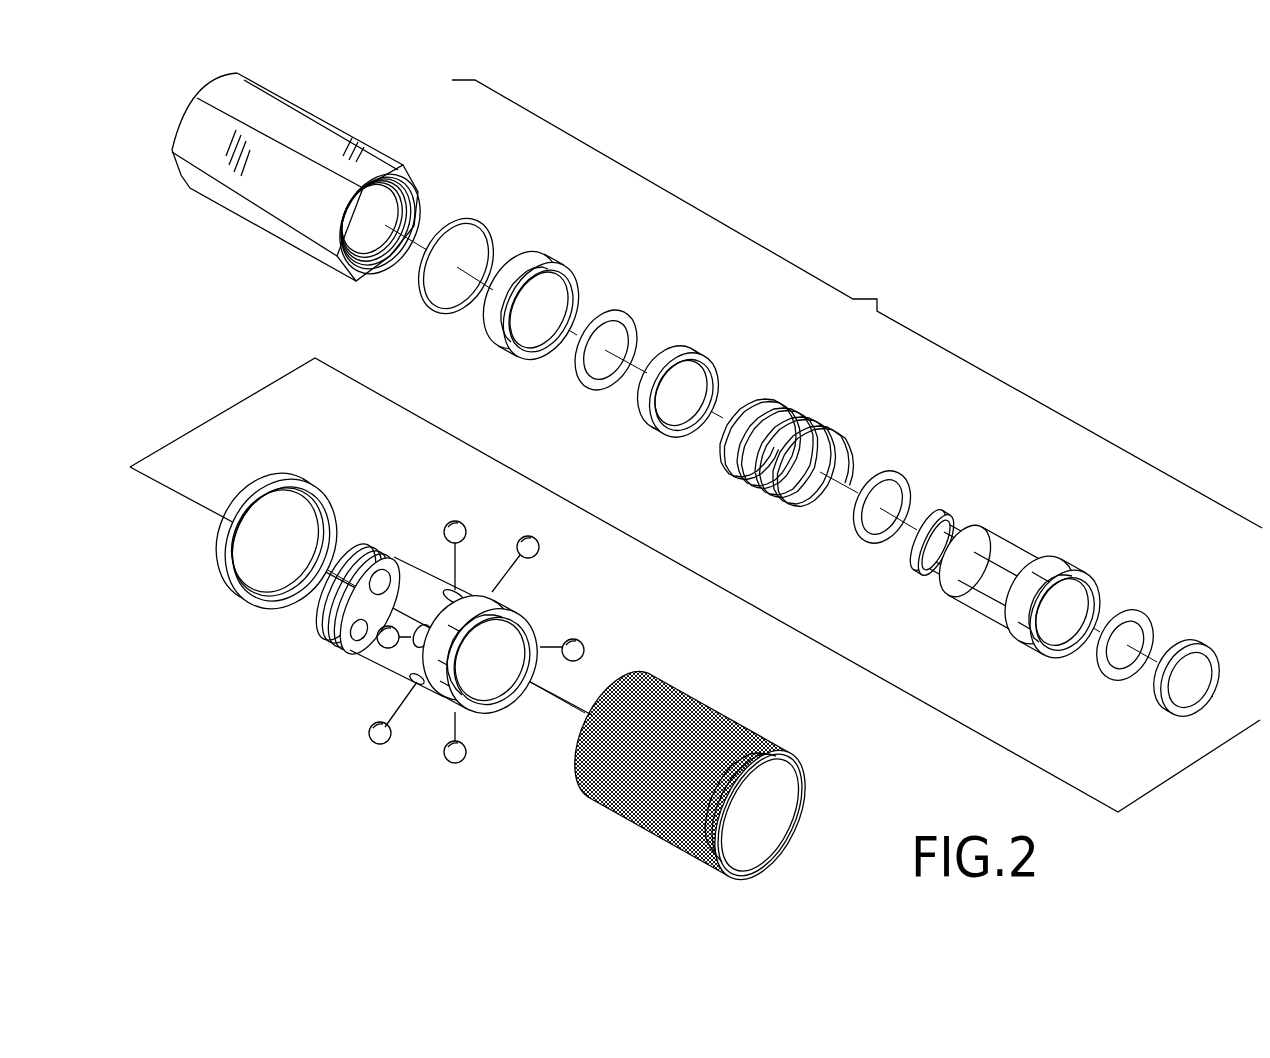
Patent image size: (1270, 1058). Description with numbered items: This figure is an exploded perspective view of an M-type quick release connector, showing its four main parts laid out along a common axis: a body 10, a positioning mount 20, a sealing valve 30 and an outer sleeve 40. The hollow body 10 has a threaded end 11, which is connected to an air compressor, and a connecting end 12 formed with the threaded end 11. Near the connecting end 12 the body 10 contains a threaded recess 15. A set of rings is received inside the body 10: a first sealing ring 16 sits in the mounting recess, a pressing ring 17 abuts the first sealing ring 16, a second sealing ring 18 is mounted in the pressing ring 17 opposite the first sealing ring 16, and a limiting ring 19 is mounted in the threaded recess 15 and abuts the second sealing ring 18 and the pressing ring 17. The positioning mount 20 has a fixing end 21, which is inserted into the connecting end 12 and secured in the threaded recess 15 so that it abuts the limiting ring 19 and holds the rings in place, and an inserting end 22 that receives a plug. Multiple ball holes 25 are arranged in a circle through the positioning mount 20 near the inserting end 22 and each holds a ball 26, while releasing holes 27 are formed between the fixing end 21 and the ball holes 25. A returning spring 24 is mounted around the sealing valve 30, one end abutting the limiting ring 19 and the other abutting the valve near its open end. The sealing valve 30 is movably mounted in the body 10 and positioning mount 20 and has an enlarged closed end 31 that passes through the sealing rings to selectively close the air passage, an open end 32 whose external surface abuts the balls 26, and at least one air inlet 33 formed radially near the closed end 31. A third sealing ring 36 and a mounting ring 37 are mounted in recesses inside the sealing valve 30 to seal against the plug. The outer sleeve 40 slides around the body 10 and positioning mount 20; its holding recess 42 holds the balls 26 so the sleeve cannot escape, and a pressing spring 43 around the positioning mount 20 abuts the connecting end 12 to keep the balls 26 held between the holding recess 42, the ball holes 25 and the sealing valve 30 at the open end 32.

The body 10 is at (305, 212).
The threaded end 11 is at (176, 133).
The connecting end 12 is at (402, 170).
The threaded recess 15 is at (383, 257).
The first sealing ring 16 is at (485, 223).
The pressing ring 17 is at (548, 265).
The second sealing ring 18 is at (627, 318).
The limiting ring 19 is at (707, 353).
The returning spring 24 is at (765, 488).
The positioning mount 20 is at (429, 649).
The fixing end 21 is at (333, 623).
The inserting end 22 is at (527, 622).
The ball holes 25 is at (450, 598).
The balls 26 is at (450, 757).
The releasing holes 27 is at (378, 580).
The pressing spring 43 is at (275, 473).
The sealing valve 30 is at (1030, 547).
The closed end 31 is at (923, 513).
The open end 32 is at (1087, 583).
The air inlet 33 is at (952, 538).
The third sealing ring 36 is at (1103, 668).
The mounting ring 37 is at (1177, 715).
The outer sleeve 40 is at (723, 765).
The holding recess 42 is at (780, 803).